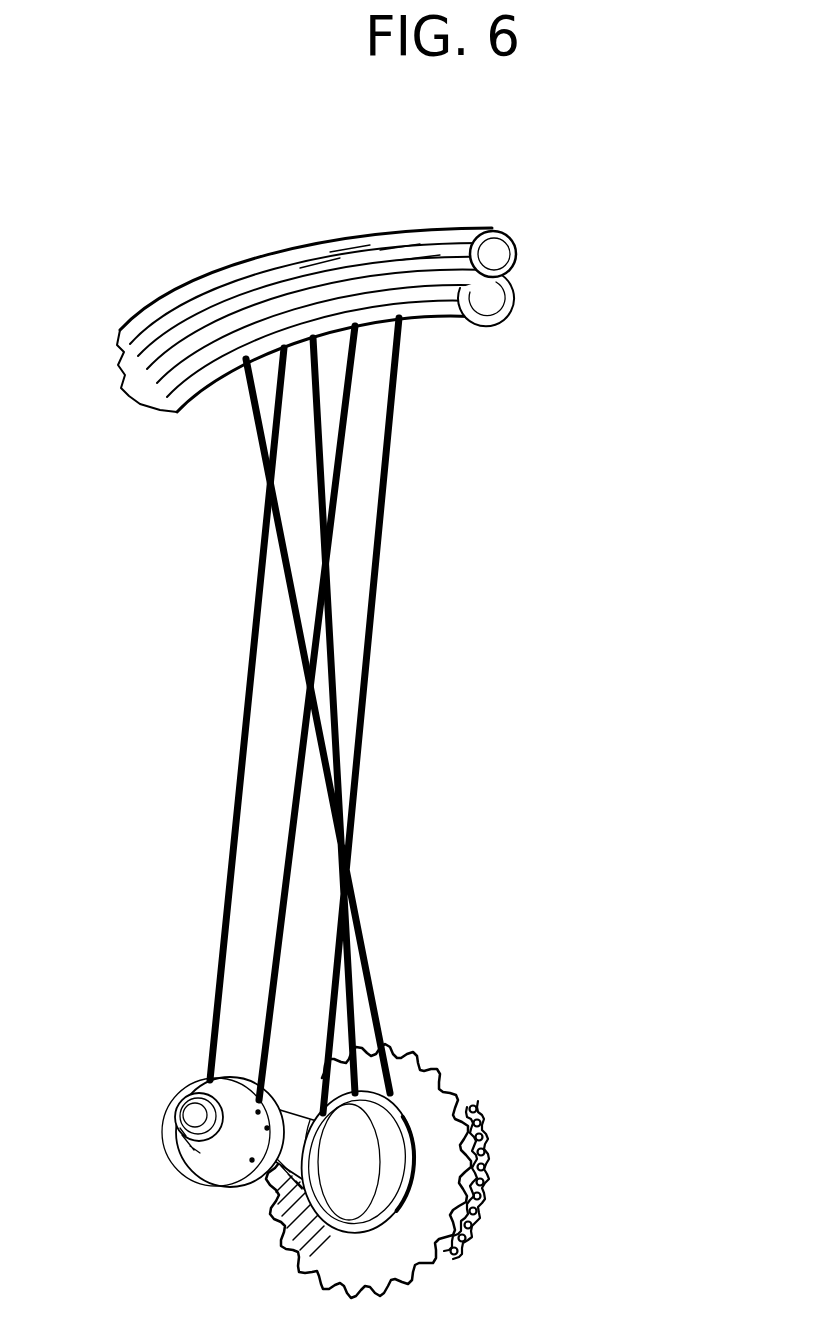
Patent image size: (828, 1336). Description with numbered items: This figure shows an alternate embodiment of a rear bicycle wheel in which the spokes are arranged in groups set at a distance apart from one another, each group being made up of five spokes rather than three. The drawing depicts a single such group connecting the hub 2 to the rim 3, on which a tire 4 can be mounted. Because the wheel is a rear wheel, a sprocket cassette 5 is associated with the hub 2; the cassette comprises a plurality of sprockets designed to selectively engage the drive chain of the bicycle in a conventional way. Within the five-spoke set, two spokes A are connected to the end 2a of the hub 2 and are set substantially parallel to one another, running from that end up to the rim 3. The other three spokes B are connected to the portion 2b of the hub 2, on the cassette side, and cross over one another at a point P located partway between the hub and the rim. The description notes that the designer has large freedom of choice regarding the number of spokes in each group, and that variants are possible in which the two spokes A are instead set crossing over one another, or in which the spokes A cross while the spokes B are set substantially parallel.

The hub 2 is at (338, 1170).
The end of the hub 2a is at (194, 1170).
The portion of the hub 2b is at (397, 1153).
The rim 3 is at (177, 412).
The tire 4 is at (158, 308).
The sprocket cassette 5 is at (510, 1177).
The spokes A is at (225, 925).
The spokes B is at (372, 1000).
The crossing point P is at (348, 867).